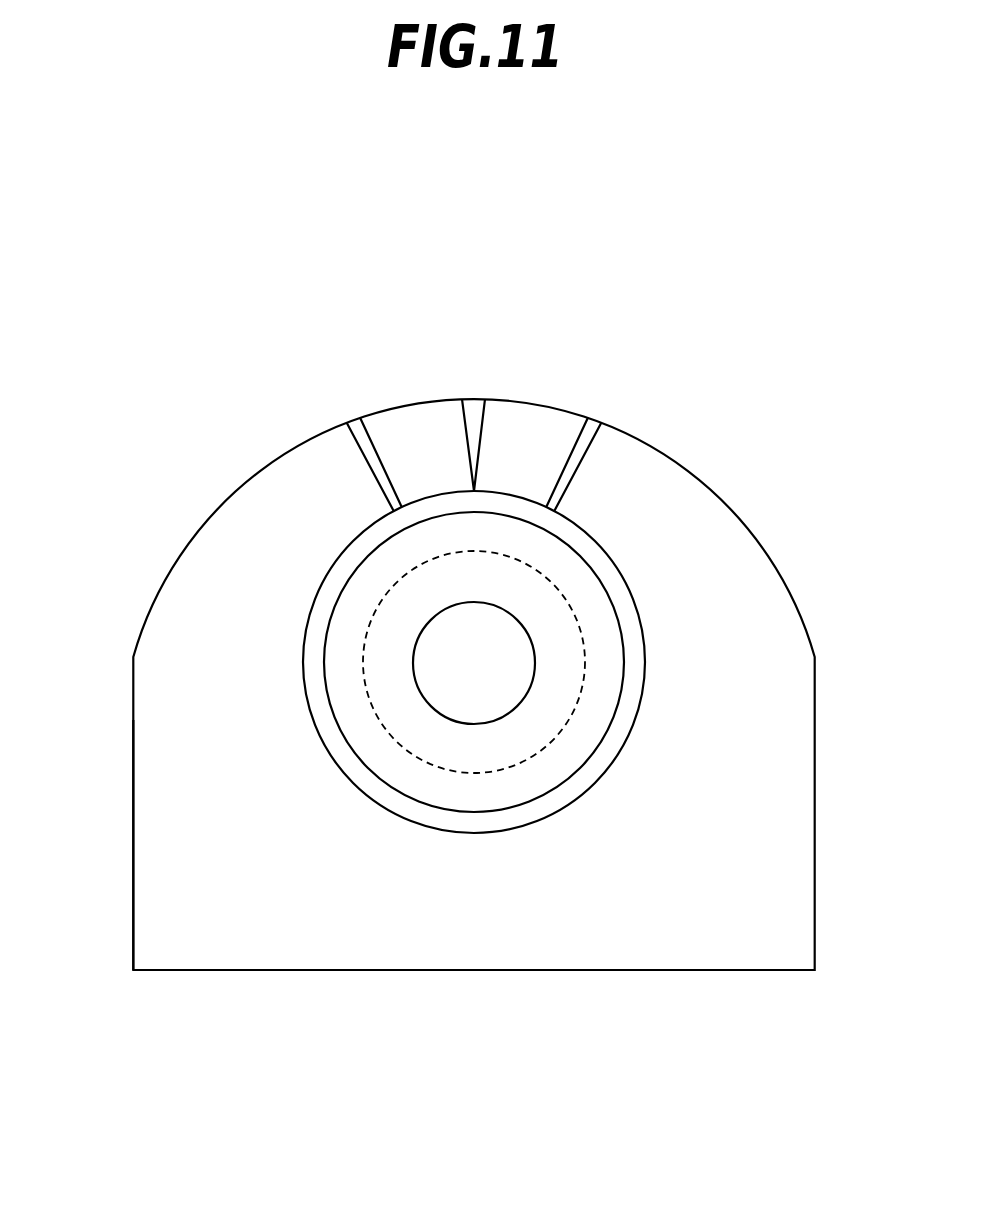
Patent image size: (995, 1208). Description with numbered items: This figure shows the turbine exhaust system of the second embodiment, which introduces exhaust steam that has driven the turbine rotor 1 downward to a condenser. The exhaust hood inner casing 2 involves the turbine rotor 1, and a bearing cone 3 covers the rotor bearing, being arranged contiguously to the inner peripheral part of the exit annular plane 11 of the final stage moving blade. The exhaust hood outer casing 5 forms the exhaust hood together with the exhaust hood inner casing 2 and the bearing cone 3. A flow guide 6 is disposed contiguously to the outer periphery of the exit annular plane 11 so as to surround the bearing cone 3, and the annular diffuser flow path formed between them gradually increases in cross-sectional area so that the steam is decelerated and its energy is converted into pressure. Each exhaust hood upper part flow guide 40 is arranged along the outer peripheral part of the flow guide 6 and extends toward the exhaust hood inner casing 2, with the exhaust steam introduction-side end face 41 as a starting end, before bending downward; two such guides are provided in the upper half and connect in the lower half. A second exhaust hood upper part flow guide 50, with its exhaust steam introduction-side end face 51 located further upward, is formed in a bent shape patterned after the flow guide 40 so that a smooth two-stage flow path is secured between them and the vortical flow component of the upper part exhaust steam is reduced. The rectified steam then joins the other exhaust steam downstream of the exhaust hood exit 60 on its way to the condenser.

The turbine rotor 1 is at (470, 702).
The exhaust hood inner casing 2 is at (405, 575).
The bearing cone 3 is at (347, 578).
The exhaust hood outer casing 5 is at (717, 493).
The flow guide 6 is at (540, 823).
The exit annular plane 11 is at (557, 715).
The exhaust hood upper part flow guide 40 is at (158, 878).
The exhaust steam introduction-side end face 41 is at (369, 448).
The second exhaust hood upper part flow guide 50 is at (420, 437).
The exhaust steam introduction-side end face 51 is at (473, 408).
The exhaust hood exit 60 is at (722, 962).